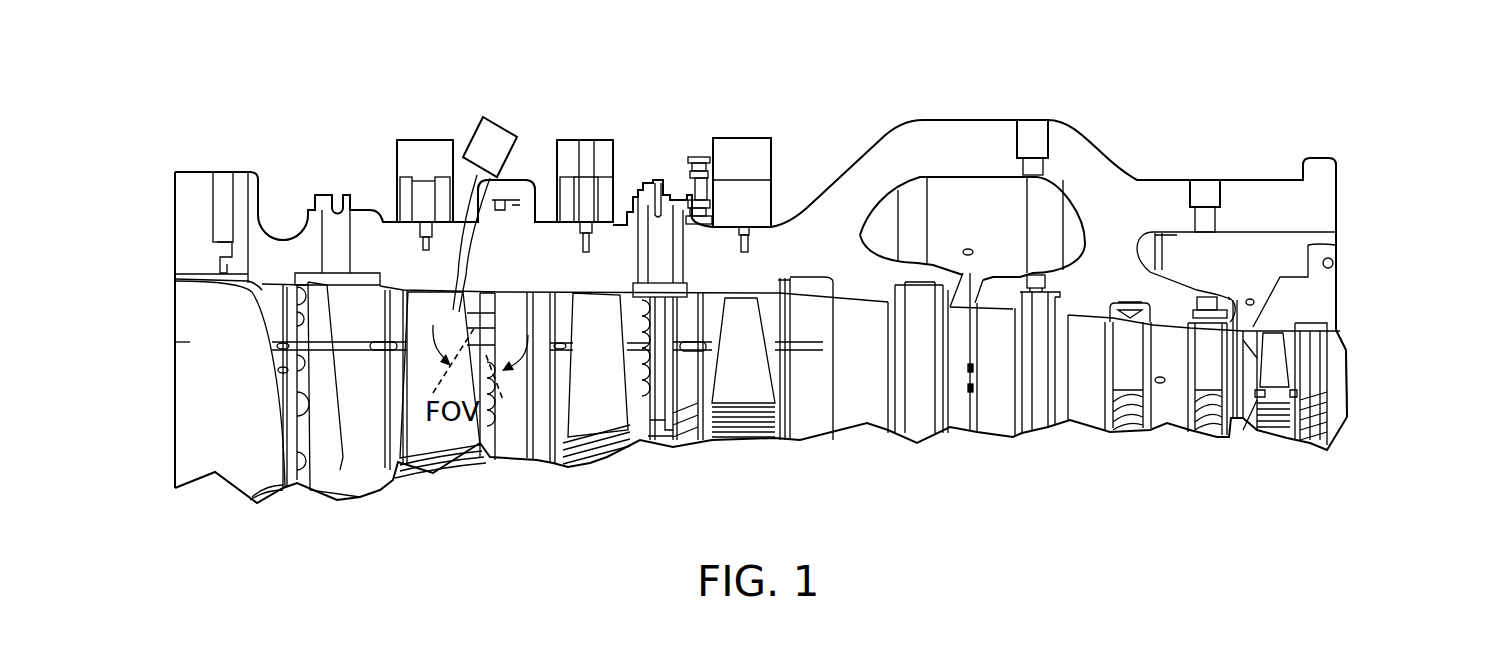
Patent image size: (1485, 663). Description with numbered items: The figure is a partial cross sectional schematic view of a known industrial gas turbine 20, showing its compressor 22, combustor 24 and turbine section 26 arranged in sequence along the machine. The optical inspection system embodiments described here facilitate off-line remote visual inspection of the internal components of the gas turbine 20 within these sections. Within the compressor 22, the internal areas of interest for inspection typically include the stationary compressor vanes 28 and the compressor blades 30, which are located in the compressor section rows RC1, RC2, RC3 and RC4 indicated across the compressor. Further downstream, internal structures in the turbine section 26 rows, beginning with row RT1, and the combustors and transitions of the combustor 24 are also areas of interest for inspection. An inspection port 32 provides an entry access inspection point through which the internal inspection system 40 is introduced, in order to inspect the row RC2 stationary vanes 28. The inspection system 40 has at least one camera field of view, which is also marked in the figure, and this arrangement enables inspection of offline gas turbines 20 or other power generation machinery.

The industrial gas turbine 20 is at (1080, 98).
The compressor 22 is at (183, 343).
The combustor 24 is at (937, 263).
The turbine section 26 is at (1337, 218).
The stationary compressor vanes 28 is at (510, 315).
The compressor blades 30 is at (427, 310).
The inspection port 32 is at (450, 285).
The internal inspection system 40 is at (491, 110).
The compressor section row RC1 is at (279, 230).
The compressor section row RC2 is at (464, 213).
The compressor section row RC3 is at (617, 192).
The compressor section row RC4 is at (768, 230).
The turbine section row RT1 is at (1247, 180).